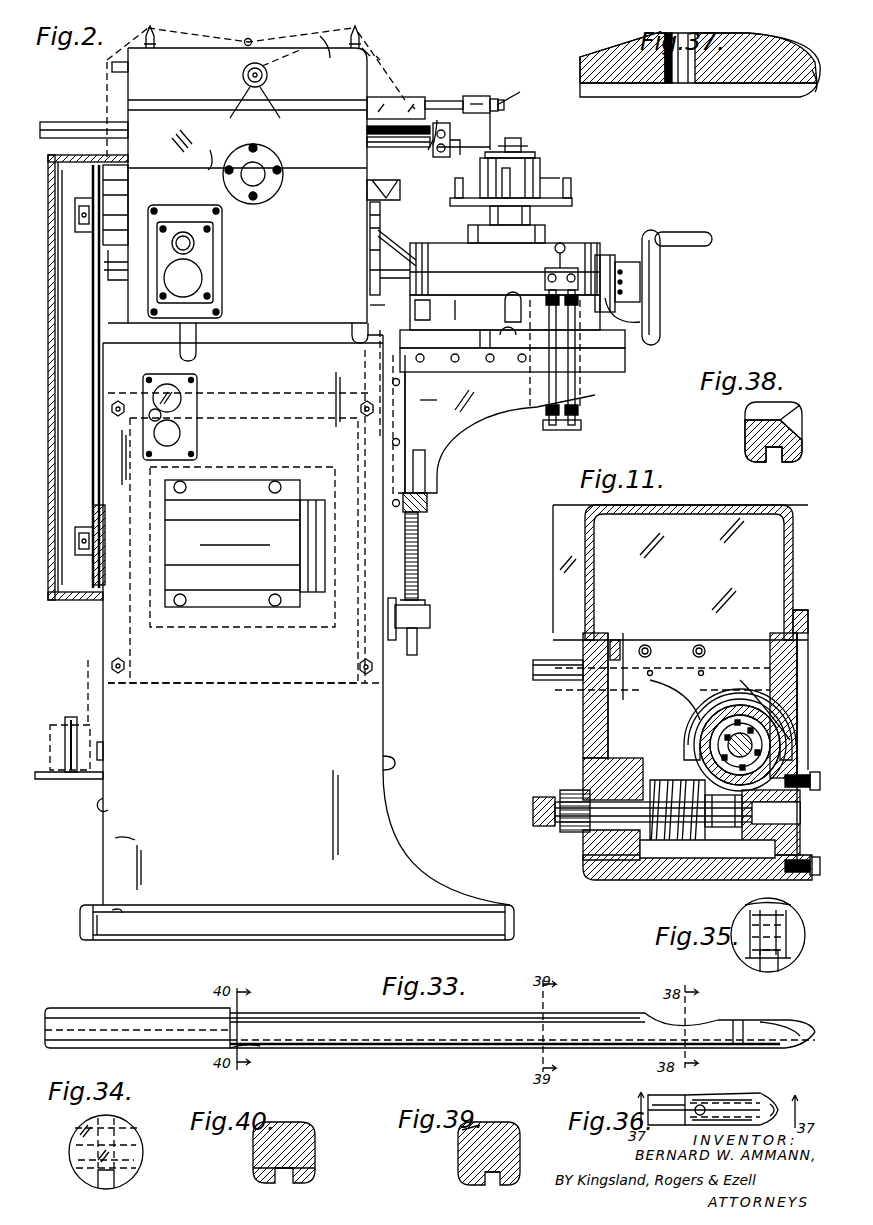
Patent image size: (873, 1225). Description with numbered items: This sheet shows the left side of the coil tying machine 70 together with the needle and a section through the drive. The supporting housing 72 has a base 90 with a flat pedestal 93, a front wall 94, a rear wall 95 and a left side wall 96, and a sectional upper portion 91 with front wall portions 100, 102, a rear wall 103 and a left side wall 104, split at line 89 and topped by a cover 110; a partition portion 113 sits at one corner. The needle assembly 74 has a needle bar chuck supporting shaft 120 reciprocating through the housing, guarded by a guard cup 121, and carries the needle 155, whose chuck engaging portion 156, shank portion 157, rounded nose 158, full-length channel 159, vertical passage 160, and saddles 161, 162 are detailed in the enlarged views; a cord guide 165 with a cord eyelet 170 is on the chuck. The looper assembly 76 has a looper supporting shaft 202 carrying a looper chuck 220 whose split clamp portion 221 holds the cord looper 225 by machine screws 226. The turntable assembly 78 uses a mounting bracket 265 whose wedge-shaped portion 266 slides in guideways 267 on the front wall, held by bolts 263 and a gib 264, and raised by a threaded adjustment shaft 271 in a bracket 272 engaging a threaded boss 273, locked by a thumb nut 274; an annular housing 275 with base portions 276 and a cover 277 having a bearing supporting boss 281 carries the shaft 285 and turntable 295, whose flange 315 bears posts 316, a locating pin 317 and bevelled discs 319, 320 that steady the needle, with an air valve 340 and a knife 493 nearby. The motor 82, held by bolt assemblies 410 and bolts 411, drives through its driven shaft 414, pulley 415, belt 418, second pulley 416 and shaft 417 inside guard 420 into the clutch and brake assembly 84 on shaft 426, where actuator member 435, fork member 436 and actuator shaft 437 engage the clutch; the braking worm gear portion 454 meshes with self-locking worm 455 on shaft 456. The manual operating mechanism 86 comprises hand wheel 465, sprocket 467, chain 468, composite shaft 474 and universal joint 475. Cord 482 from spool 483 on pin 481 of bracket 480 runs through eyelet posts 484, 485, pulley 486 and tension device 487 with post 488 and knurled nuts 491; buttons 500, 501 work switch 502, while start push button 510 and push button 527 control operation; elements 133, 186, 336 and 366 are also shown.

In FIG. 2, the coil tying machine 70 is at (606, 205).
In FIG. 11, the coil tying machine 70 is at (525, 705).
In FIG. 2, the supporting housing 72 is at (395, 689).
In FIG. 11, the supporting housing 72 is at (588, 874).
In FIG. 2, the needle assembly 74 is at (422, 149).
In FIG. 2, the looper assembly 76 is at (513, 93).
In FIG. 2, the turntable assembly 78 is at (651, 232).
In FIG. 2, the motor 82 is at (233, 590).
In FIG. 11, the clutch and brake assembly 84 is at (713, 620).
In FIG. 2, the manual operating mechanism 86 is at (676, 306).
In FIG. 2, the split line 89 is at (202, 154).
In FIG. 11, the split line 89 is at (785, 740).
In FIG. 2, the base 90 is at (398, 743).
In FIG. 2, the sectional upper portion 91 is at (412, 307).
In FIG. 11, the sectional upper portion 91 is at (573, 655).
In FIG. 2, the pedestal 93 is at (138, 932).
In FIG. 2, the front wall 94 is at (382, 763).
In FIG. 2, the rear wall 95 is at (110, 805).
In FIG. 2, the left side wall 96 is at (115, 838).
In FIG. 2, the front wall portion 100 is at (366, 160).
In FIG. 11, the front wall portion 102 is at (590, 778).
In FIG. 2, the rear wall 103 is at (123, 172).
In FIG. 11, the rear wall 103 is at (795, 768).
In FIG. 2, the left side wall 104 is at (158, 128).
In FIG. 2, the cover 110 is at (327, 58).
In FIG. 11, the cover 110 is at (694, 520).
In FIG. 11, the partition portion 113 is at (660, 876).
In FIG. 2, the needle bar chuck supporting shaft 120 is at (366, 128).
In FIG. 2, the guard cup 121 is at (63, 127).
In FIG. 2, the bearing cap 133 is at (224, 187).
In FIG. 2, the needle 155 is at (456, 137).
In FIG. 37, the needle 155 is at (738, 111).
In FIG. 38, the needle 155 is at (735, 447).
In FIG. 35, the needle 155 is at (725, 966).
In FIG. 33, the needle 155 is at (328, 1008).
In FIG. 34, the needle 155 is at (144, 1187).
In FIG. 40, the needle 155 is at (325, 1159).
In FIG. 39, the needle 155 is at (453, 1182).
In FIG. 36, the needle 155 is at (769, 1100).
In FIG. 2, the chuck engaging portion 156 is at (433, 155).
In FIG. 35, the chuck engaging portion 156 is at (752, 910).
In FIG. 33, the chuck engaging portion 156 is at (98, 1016).
In FIG. 34, the chuck engaging portion 156 is at (116, 1108).
In FIG. 2, the shank portion 157 is at (478, 150).
In FIG. 37, the shank portion 157 is at (607, 80).
In FIG. 38, the shank portion 157 is at (744, 428).
In FIG. 35, the shank portion 157 is at (786, 930).
In FIG. 33, the shank portion 157 is at (478, 1030).
In FIG. 34, the shank portion 157 is at (78, 1128).
In FIG. 40, the shank portion 157 is at (293, 1132).
In FIG. 39, the shank portion 157 is at (493, 1132).
In FIG. 36, the shank portion 157 is at (665, 1097).
In FIG. 37, the rounded nose 158 is at (815, 92).
In FIG. 33, the rounded nose 158 is at (808, 1028).
In FIG. 36, the rounded nose 158 is at (782, 1106).
In FIG. 37, the channel 159 is at (637, 90).
In FIG. 38, the channel 159 is at (775, 462).
In FIG. 35, the channel 159 is at (768, 972).
In FIG. 33, the channel 159 is at (365, 1050).
In FIG. 34, the channel 159 is at (90, 1181).
In FIG. 40, the channel 159 is at (280, 1180).
In FIG. 39, the channel 159 is at (498, 1185).
In FIG. 36, the channel 159 is at (747, 1095).
In FIG. 37, the vertical passage 160 is at (688, 84).
In FIG. 35, the vertical passage 160 is at (778, 925).
In FIG. 33, the vertical passage 160 is at (738, 1020).
In FIG. 36, the vertical passage 160 is at (703, 1105).
In FIG. 37, the saddle 161 is at (590, 56).
In FIG. 38, the saddle 161 is at (770, 412).
In FIG. 33, the saddle 161 is at (665, 1026).
In FIG. 35, the saddle 162 is at (744, 952).
In FIG. 33, the saddle 162 is at (262, 1047).
In FIG. 34, the saddle 162 is at (130, 1166).
In FIG. 40, the saddle 162 is at (254, 1173).
In FIG. 2, the cord guide 165 is at (463, 138).
In FIG. 2, the cord eyelet 170 is at (436, 120).
In FIG. 2, the bracket 186 is at (370, 98).
In FIG. 2, the looper supporting shaft 202 is at (455, 100).
In FIG. 2, the looper chuck 220 is at (483, 90).
In FIG. 2, the split clamp portion 221 is at (504, 104).
In FIG. 2, the cord looper 225 is at (488, 96).
In FIG. 2, the machine screws 226 is at (497, 110).
In FIG. 2, the bolts 263 is at (392, 503).
In FIG. 2, the gib 264 is at (405, 400).
In FIG. 2, the mounting bracket 265 is at (480, 418).
In FIG. 2, the wedge-shaped portion 266 is at (407, 423).
In FIG. 2, the guideways 267 is at (374, 311).
In FIG. 2, the threaded adjustment shaft 271 is at (420, 572).
In FIG. 2, the bracket 272 is at (432, 617).
In FIG. 2, the threaded boss 273 is at (426, 480).
In FIG. 2, the locking thumb nut 274 is at (428, 504).
In FIG. 2, the annular housing 275 is at (470, 400).
In FIG. 2, the base portions 276 is at (482, 400).
In FIG. 2, the cover 277 is at (450, 258).
In FIG. 2, the bearing supporting boss 281 is at (470, 232).
In FIG. 2, the shaft 285 is at (531, 215).
In FIG. 2, the turntable 295 is at (545, 172).
In FIG. 2, the annular horizontal flange 315 is at (562, 204).
In FIG. 2, the posts 316 is at (500, 192).
In FIG. 2, the locating pin 317 is at (560, 178).
In FIG. 2, the bevelled disc 319 is at (528, 143).
In FIG. 2, the bevelled disc 320 is at (536, 156).
In FIG. 2, the rods 336 is at (523, 420).
In FIG. 2, the air valve 340 is at (605, 248).
In FIG. 2, the column 366 is at (385, 285).
In FIG. 2, the bolt assemblies 410 is at (272, 595).
In FIG. 2, the bolts 411 is at (364, 676).
In FIG. 2, the driven shaft 414 is at (75, 538).
In FIG. 2, the pulley 415 is at (92, 510).
In FIG. 2, the second pulley 416 is at (92, 265).
In FIG. 2, the shaft 417 is at (80, 230).
In FIG. 2, the belt 418 is at (96, 368).
In FIG. 2, the guard 420 is at (63, 603).
In FIG. 11, the shaft 426 is at (718, 745).
In FIG. 11, the actuator member 435 is at (722, 722).
In FIG. 11, the fork member 436 is at (690, 640).
In FIG. 11, the actuator shaft 437 is at (532, 670).
In FIG. 11, the worm gear portion 454 is at (695, 735).
In FIG. 11, the self-locking worm 455 is at (683, 858).
In FIG. 11, the shaft 456 is at (625, 868).
In FIG. 2, the hand wheel 465 is at (660, 286).
In FIG. 2, the sprocket 467 is at (642, 270).
In FIG. 2, the chain 468 is at (642, 326).
In FIG. 2, the axially extensible composite shaft 474 is at (398, 240).
In FIG. 11, the universal joint 475 is at (548, 828).
In FIG. 2, the cord spool supporting bracket 480 is at (72, 782).
In FIG. 2, the pin 481 is at (74, 740).
In FIG. 2, the cord 482 is at (86, 670).
In FIG. 2, the spool of cord 483 is at (50, 730).
In FIG. 2, the eyelet posts 484 is at (111, 68).
In FIG. 2, the eyelet posts 485 is at (378, 58).
In FIG. 2, the small pulley 486 is at (253, 40).
In FIG. 2, the tension device 487 is at (239, 85).
In FIG. 2, the post 488 is at (282, 111).
In FIG. 2, the knurled nuts 491 is at (228, 111).
In FIG. 2, the knife 493 is at (395, 198).
In FIG. 2, the start button 500 is at (178, 393).
In FIG. 2, the stop button 501 is at (176, 433).
In FIG. 2, the switch 502 is at (162, 414).
In FIG. 2, the start push button 510 is at (190, 243).
In FIG. 2, the push button 527 is at (197, 278).